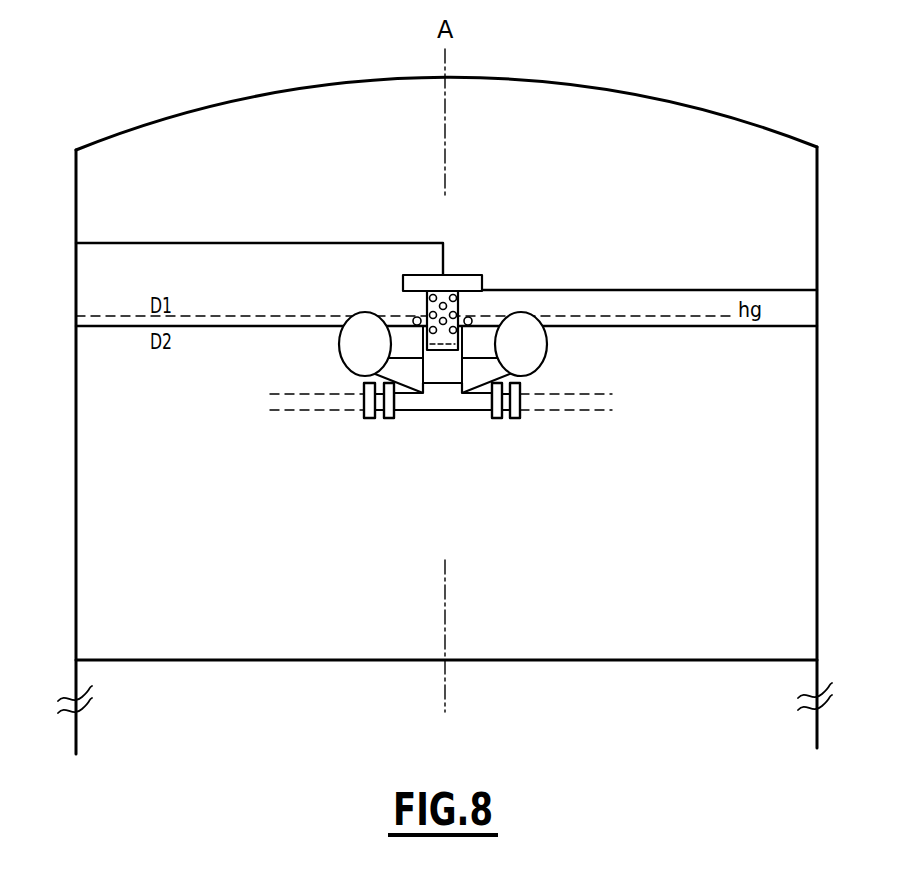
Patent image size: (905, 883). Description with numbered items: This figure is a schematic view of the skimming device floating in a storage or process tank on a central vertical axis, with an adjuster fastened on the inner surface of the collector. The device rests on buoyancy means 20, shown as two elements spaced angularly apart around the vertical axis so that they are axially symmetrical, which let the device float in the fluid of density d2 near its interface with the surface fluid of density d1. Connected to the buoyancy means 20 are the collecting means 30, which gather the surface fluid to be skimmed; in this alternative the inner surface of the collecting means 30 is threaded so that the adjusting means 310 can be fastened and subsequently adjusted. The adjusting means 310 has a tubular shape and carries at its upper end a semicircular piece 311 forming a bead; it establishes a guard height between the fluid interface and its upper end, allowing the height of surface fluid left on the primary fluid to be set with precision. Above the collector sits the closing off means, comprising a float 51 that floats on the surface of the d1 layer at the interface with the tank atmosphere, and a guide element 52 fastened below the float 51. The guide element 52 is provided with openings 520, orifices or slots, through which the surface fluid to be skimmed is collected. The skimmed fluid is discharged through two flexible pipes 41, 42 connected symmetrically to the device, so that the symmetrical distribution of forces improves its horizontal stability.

The buoyancy means 20 is at (547, 345).
The collecting means 30 is at (425, 411).
The flexible pipe 41 is at (308, 411).
The flexible pipe 42 is at (548, 411).
The float 51 is at (464, 273).
The guide element 52 is at (425, 296).
The openings 520 is at (460, 298).
The adjusting means 310 is at (495, 330).
The semicircular piece 311 is at (413, 319).